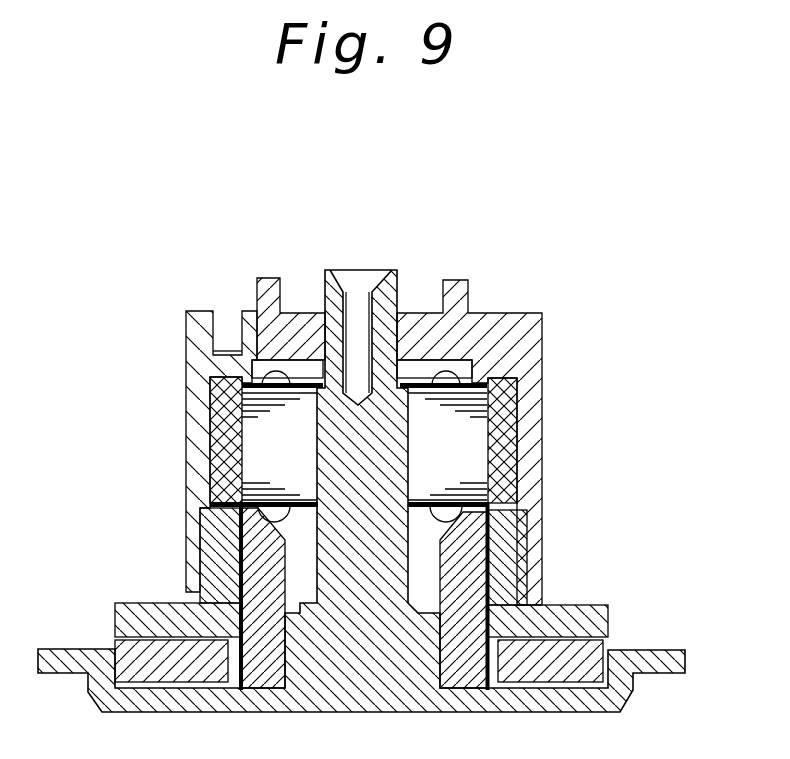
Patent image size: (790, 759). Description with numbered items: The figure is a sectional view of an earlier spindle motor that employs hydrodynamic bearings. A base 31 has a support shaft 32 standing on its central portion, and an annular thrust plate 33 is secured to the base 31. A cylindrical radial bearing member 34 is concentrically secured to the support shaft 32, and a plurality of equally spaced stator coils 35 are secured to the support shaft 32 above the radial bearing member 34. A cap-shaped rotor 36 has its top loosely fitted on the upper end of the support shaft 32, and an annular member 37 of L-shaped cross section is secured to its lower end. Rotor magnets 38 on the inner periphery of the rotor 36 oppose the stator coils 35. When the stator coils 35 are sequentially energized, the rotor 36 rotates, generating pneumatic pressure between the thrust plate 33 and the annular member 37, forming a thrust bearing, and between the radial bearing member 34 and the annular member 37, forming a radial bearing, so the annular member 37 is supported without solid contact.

The base 31 is at (247, 697).
The support shaft 32 is at (207, 518).
The annular thrust plate 33 is at (130, 651).
The cylindrical radial bearing member 34 is at (488, 584).
The stator coils 35 is at (211, 394).
The rotor 36 is at (263, 330).
The annular member 37 is at (200, 562).
The rotor magnets 38 is at (215, 448).